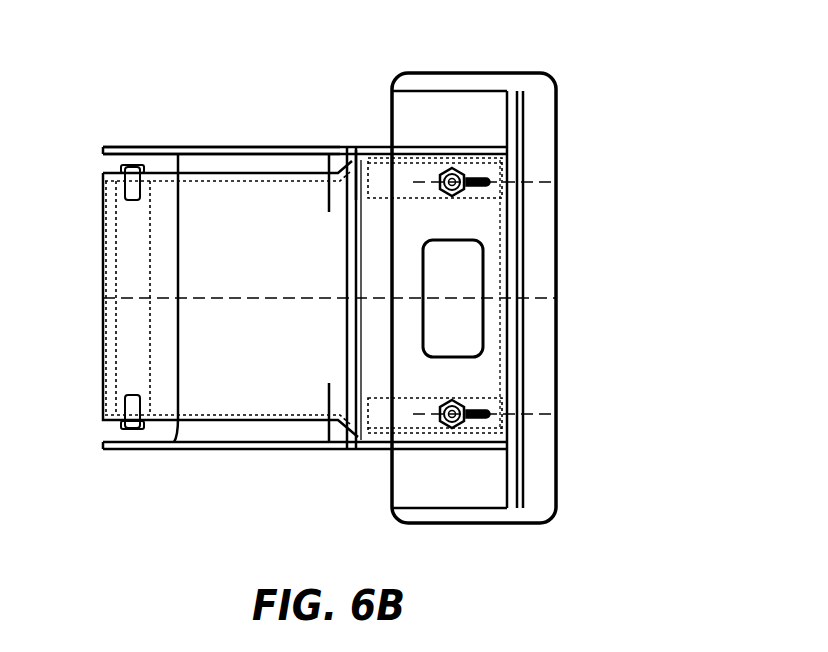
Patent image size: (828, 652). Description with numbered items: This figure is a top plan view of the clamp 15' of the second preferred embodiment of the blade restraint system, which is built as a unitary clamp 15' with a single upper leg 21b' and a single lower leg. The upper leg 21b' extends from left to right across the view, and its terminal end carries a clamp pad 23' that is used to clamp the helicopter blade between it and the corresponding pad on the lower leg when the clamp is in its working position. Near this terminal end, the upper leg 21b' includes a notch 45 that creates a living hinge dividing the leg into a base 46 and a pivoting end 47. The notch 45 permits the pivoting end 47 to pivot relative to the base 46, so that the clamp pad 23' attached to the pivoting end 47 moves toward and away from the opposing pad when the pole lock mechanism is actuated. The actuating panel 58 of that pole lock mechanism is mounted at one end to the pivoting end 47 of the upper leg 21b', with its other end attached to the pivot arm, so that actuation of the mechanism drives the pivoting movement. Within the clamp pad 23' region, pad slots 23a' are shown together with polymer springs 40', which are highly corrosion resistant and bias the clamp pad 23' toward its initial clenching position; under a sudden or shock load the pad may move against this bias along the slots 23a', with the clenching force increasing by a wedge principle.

The unitary clamp 15' is at (221, 92).
The base 46 is at (241, 150).
The notch 45 is at (349, 148).
The pivoting end 47 is at (371, 148).
The actuating panel 58 is at (188, 259).
The upper leg 21b' is at (305, 487).
The clamp pad 23' is at (509, 298).
The pad slot 23a' is at (568, 325).
The polymer spring 40' is at (532, 298).